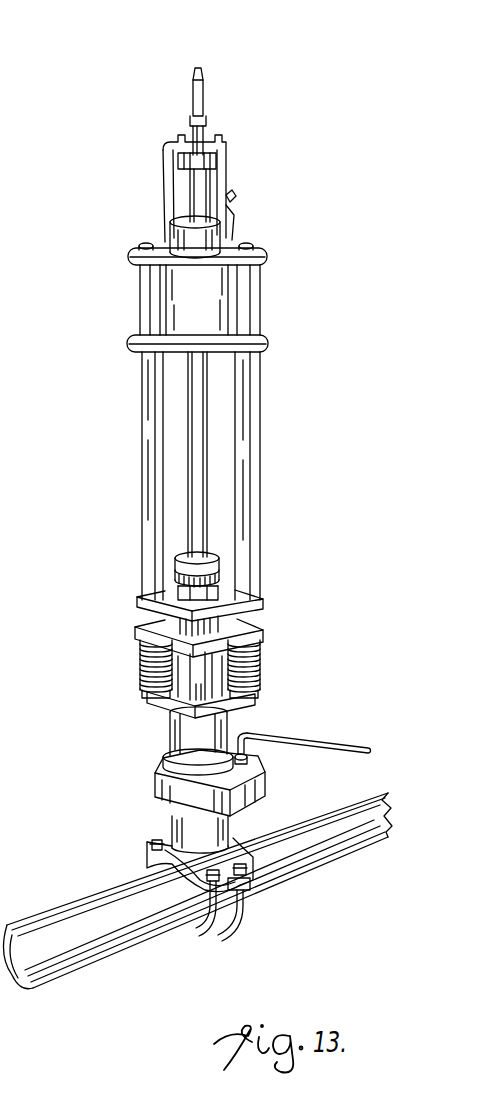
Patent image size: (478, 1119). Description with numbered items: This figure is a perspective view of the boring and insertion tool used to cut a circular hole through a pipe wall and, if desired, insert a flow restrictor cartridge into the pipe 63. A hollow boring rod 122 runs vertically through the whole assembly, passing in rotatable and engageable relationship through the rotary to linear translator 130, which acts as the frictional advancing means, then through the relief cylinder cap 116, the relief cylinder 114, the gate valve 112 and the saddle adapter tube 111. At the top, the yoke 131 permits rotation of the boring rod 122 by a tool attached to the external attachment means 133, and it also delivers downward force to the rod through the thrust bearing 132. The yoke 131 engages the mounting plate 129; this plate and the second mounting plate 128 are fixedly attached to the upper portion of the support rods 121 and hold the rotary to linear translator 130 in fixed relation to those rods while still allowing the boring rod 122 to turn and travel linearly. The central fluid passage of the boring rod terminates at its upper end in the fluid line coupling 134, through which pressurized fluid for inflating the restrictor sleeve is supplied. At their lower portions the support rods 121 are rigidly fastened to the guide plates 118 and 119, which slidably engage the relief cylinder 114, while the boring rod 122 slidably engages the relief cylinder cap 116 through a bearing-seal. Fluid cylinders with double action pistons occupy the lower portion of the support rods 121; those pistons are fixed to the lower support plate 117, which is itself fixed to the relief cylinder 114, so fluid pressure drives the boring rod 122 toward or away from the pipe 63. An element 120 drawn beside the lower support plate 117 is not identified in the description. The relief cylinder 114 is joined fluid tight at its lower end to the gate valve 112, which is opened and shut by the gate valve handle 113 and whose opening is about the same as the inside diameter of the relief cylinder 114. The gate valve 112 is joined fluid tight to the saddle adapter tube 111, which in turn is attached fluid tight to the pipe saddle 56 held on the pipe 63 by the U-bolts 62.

The fluid line coupling 134 is at (199, 71).
The external attachment means 133 is at (206, 120).
The thrust bearing 132 is at (216, 159).
The yoke 131 is at (226, 178).
The mounting plate 129 is at (266, 258).
The rotary to linear translator 130 is at (220, 302).
The mounting plate 128 is at (267, 344).
The support rods 121 is at (142, 418).
The hollow boring rod 122 is at (208, 427).
The relief cylinder cap 116 is at (220, 560).
The guide plate 119 is at (262, 605).
The guide plate 118 is at (260, 636).
The springs 120 is at (188, 690).
The lower support plate 117 is at (243, 713).
The relief cylinder 114 is at (187, 749).
The gate valve handle 113 is at (353, 748).
The gate valve 112 is at (262, 780).
The saddle adapter tube 111 is at (227, 824).
The pipe saddle 56 is at (180, 848).
The U-bolts 62 is at (230, 923).
The pipe 63 is at (107, 958).